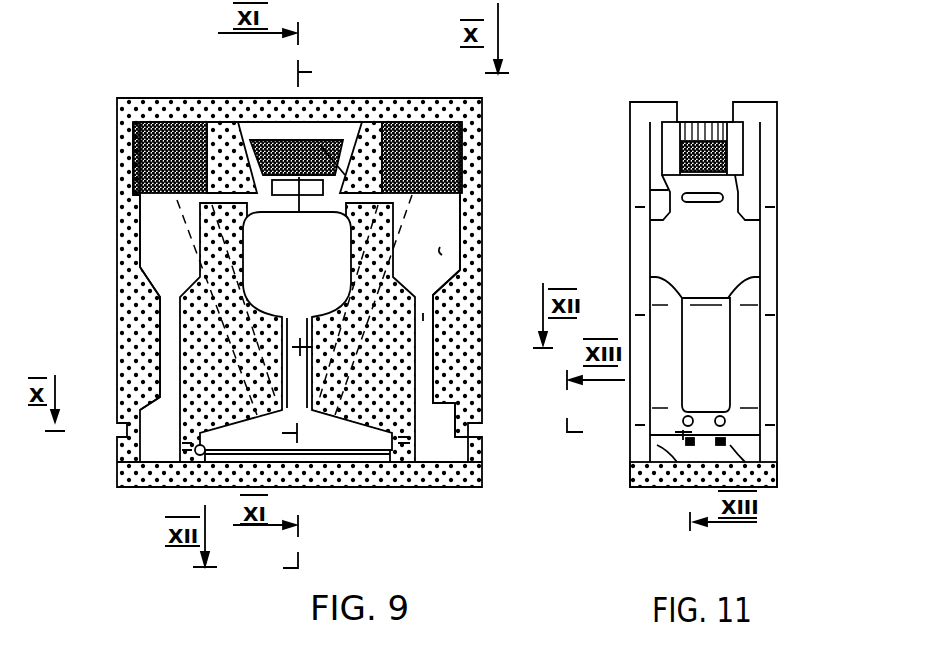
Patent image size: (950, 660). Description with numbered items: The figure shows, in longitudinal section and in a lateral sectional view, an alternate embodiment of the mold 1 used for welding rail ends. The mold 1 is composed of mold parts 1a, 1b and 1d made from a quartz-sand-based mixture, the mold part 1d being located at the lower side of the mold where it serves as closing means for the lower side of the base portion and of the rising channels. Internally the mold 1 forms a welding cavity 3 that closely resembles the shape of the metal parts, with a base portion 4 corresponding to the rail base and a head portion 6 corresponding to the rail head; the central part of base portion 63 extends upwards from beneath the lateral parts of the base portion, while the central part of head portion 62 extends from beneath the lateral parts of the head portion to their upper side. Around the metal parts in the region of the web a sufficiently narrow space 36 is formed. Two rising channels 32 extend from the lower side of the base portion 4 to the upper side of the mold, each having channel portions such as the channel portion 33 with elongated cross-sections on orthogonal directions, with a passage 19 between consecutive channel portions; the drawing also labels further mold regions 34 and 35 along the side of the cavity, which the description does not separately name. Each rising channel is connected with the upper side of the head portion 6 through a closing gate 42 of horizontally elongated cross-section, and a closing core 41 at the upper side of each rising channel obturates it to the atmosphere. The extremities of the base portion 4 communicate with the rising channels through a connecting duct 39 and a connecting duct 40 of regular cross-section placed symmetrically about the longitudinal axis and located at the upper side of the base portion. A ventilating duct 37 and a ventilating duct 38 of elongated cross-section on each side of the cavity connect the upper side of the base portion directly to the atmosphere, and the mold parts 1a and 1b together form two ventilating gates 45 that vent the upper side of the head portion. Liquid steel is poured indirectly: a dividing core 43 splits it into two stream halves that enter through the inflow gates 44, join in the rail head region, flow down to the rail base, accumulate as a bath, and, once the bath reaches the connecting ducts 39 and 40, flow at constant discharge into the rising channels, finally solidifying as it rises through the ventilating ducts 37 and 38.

In FIG. 9, the mold 1 is at (127, 367).
In FIG. 9, the mold part 1a is at (213, 365).
In FIG. 9, the mold part 1b is at (457, 403).
In FIG. 9, the mold part 1d is at (380, 475).
In FIG. 9, the welding cavity 3 is at (200, 227).
In FIG. 9, the base portion 4 is at (200, 455).
In FIG. 9, the head portion 6 is at (420, 215).
In FIG. 9, the passage 19 is at (140, 268).
In FIG. 9, the rising channel 32 is at (167, 318).
In FIG. 9, the channel portion 33 is at (440, 437).
In FIG. 9, the right wall projection 34 is at (455, 272).
In FIG. 9, the recess 35 is at (437, 250).
In FIG. 9, the space 36 is at (313, 360).
In FIG. 11, the space 36 is at (708, 363).
In FIG. 11, the ventilating duct 37 is at (687, 420).
In FIG. 11, the ventilating duct 38 is at (733, 422).
In FIG. 11, the connecting duct 39 is at (688, 445).
In FIG. 11, the connecting duct 40 is at (723, 445).
In FIG. 9, the closing core 41 is at (167, 122).
In FIG. 9, the closing gate 42 is at (225, 125).
In FIG. 11, the closing gate 42 is at (706, 202).
In FIG. 9, the dividing core 43 is at (263, 148).
In FIG. 9, the inflow gate 44 is at (242, 125).
In FIG. 9, the ventilating gate 45 is at (321, 145).
In FIG. 11, the ventilating gate 45 is at (750, 178).
In FIG. 9, the central part of head portion 62 is at (423, 317).
In FIG. 11, the central part of head portion 62 is at (755, 296).
In FIG. 9, the central part of base portion 63 is at (333, 458).
In FIG. 11, the central part of base portion 63 is at (765, 462).